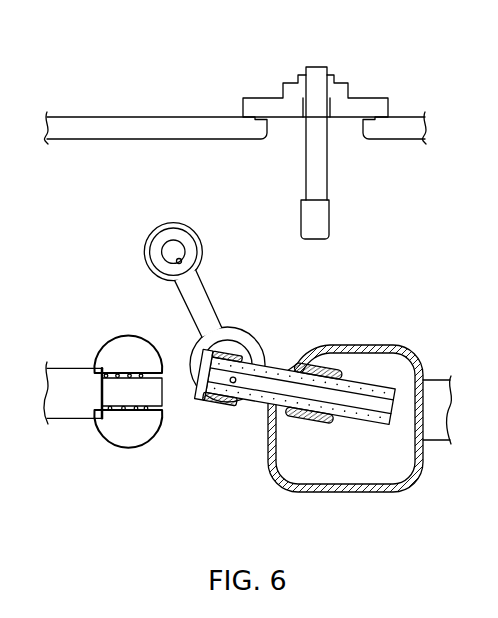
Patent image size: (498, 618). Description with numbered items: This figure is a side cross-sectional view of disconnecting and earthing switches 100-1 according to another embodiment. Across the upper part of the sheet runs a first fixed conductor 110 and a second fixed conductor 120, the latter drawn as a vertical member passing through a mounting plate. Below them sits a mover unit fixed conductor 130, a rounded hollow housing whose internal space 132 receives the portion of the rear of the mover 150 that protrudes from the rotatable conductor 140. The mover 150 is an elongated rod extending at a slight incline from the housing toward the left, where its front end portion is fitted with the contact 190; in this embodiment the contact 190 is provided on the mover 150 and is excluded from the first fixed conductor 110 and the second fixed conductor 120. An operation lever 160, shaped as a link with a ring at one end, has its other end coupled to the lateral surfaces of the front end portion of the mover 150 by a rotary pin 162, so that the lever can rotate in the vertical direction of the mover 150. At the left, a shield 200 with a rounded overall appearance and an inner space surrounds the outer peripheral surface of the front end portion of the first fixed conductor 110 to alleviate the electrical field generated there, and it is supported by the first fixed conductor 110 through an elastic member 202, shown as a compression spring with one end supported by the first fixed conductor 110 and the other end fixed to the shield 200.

The disconnecting and earthing switches 100-1 is at (197, 44).
The first fixed conductor 110 is at (125, 398).
The second fixed conductor 120 is at (318, 178).
The mover unit fixed conductor 130 is at (333, 493).
The internal space 132 is at (372, 467).
The rotatable conductor 140 is at (320, 370).
The mover 150 is at (281, 366).
The operation lever 160 is at (196, 288).
The rotary pin 162 is at (229, 353).
The contact 190 is at (212, 404).
The shield 200 is at (128, 343).
The elastic member 202 is at (130, 375).